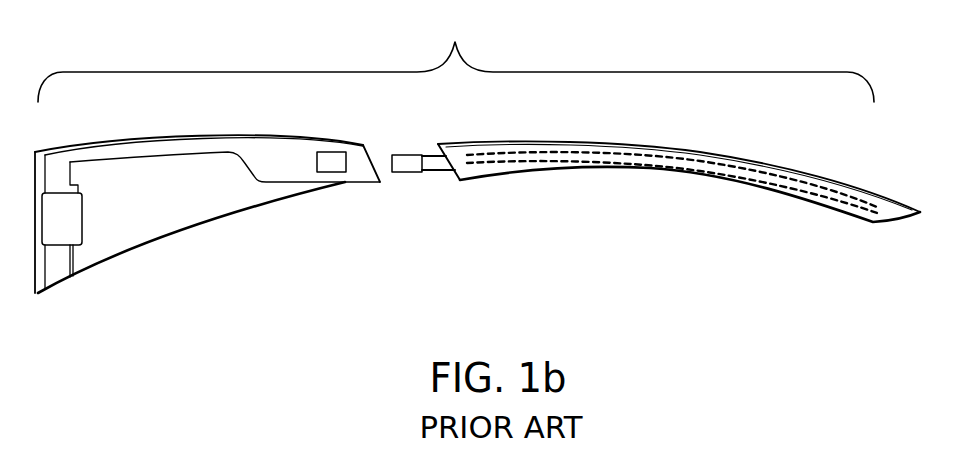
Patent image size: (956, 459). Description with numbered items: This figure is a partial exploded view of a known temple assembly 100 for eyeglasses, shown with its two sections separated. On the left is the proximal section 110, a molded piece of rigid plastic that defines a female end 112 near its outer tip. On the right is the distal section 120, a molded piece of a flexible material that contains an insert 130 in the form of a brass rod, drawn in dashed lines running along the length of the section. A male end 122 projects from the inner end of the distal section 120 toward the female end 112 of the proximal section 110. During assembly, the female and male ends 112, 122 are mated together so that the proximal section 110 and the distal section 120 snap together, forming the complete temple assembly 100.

The temple assembly 100 is at (456, 56).
The proximal section 110 is at (168, 205).
The female end 112 is at (333, 162).
The male end 122 is at (405, 172).
The distal section 120 is at (892, 216).
The insert 130 is at (552, 158).